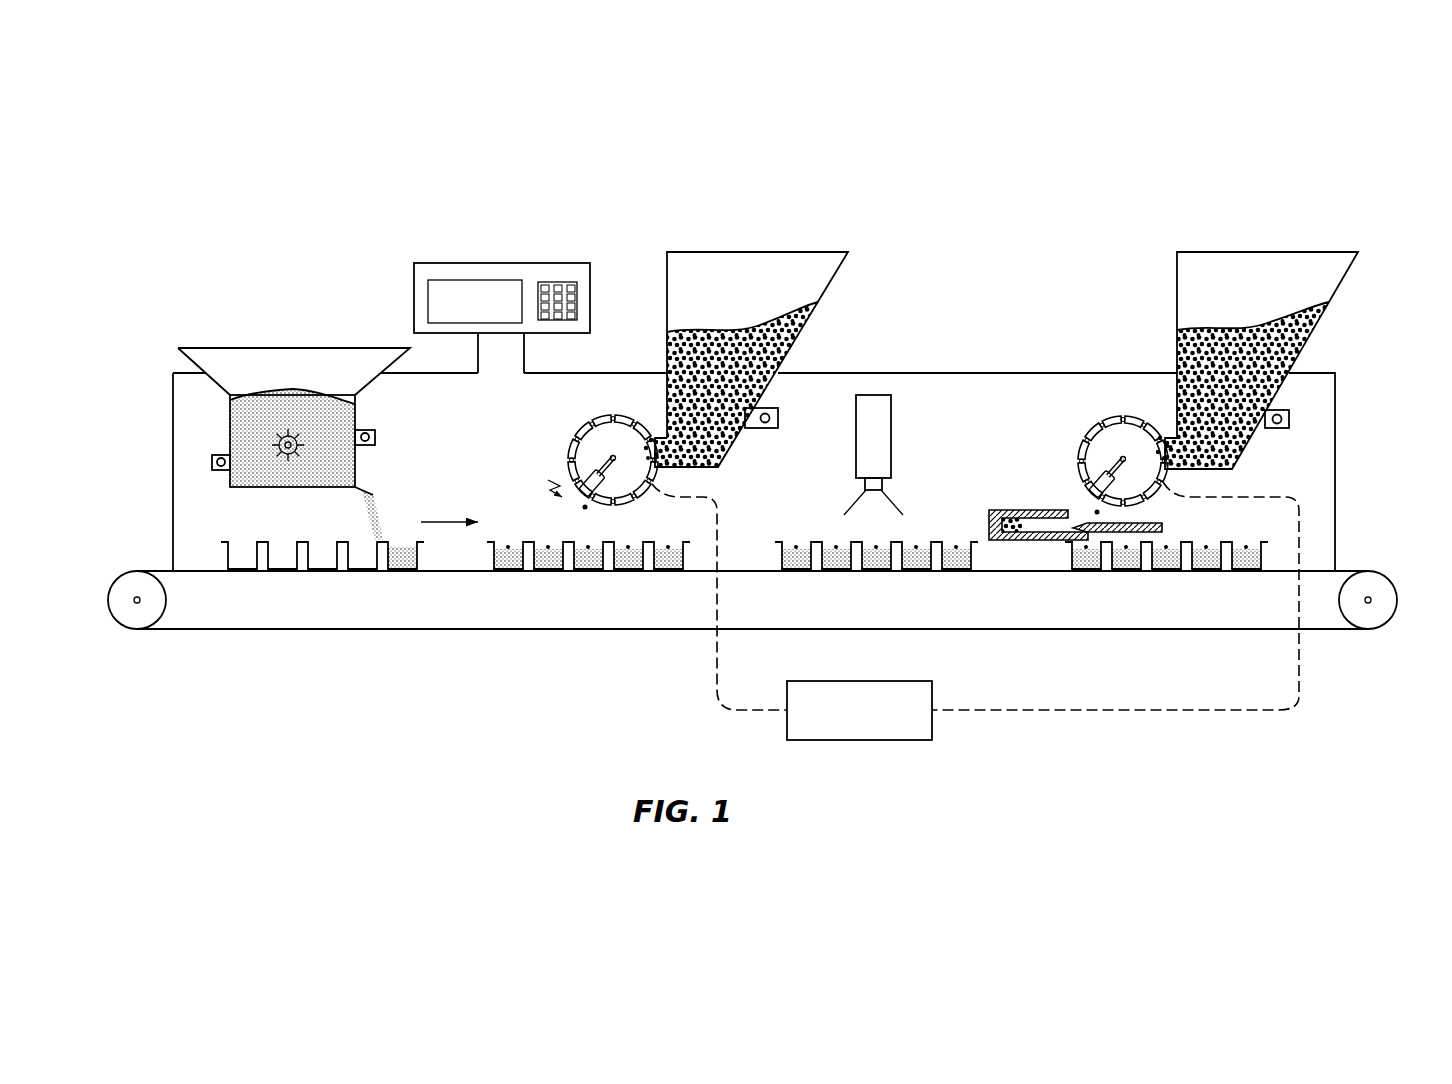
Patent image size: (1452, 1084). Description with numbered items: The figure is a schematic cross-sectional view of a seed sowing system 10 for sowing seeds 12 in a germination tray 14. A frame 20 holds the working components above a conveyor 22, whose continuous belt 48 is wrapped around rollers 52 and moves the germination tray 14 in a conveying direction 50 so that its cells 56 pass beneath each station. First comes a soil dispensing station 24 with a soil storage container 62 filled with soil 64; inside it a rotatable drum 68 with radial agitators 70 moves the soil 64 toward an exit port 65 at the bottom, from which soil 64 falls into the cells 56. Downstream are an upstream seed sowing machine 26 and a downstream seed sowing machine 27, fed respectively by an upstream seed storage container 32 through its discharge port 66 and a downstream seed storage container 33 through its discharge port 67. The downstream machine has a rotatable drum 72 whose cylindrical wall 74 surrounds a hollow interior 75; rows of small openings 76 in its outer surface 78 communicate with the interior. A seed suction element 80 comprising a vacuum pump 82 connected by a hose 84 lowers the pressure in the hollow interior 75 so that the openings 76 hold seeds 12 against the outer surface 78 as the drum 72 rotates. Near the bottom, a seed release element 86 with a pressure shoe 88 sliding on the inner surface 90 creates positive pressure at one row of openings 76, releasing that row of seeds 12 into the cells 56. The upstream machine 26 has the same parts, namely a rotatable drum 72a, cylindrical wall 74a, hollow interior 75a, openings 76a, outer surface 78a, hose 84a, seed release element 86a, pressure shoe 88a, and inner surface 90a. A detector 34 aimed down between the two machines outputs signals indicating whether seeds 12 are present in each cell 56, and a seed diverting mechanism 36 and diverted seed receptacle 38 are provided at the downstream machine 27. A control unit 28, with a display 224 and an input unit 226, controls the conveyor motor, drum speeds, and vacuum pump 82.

The seed sowing system 10 is at (142, 222).
The seeds 12 is at (738, 326).
The germination tray 14 is at (213, 552).
The frame 20 is at (1330, 456).
The conveyor 22 is at (160, 568).
The soil dispensing station 24 is at (136, 378).
The upstream seed sowing machine 26 is at (618, 365).
The downstream seed sowing machine 27 is at (1082, 410).
The control unit 28 is at (410, 288).
The upstream seed storage container 32 is at (852, 294).
The downstream seed storage container 33 is at (1365, 295).
The detector 34 is at (900, 438).
The seed diverting mechanism 36 is at (1167, 529).
The diverted seed receptacle 38 is at (1012, 500).
The continuous belt 48 is at (462, 572).
The conveying direction 50 is at (453, 520).
The rollers 52 is at (137, 617).
The cells 56 is at (248, 545).
The soil storage container 62 is at (230, 426).
The soil 64 is at (281, 400).
The exit port 65 is at (362, 472).
The discharge port 66 is at (655, 440).
The discharge port 67 is at (1171, 436).
The rotatable drum 68 is at (291, 460).
The radial agitators 70 is at (296, 438).
The rotatable drum 72 is at (1157, 400).
The rotatable drum 72a is at (573, 408).
The cylindrical wall 74 is at (1163, 470).
The cylindrical wall 74a is at (652, 470).
The hollow interior 75 is at (1112, 420).
The hollow interior 75a is at (607, 415).
The openings 76 is at (1130, 435).
The openings 76a is at (623, 435).
The outer surface 78 is at (1085, 442).
The outer surface 78a is at (626, 501).
The seed suction element 80 is at (1022, 760).
The vacuum pump 82 is at (920, 681).
The hose 84 is at (1290, 502).
The hose 84a is at (712, 500).
The seed release element 86 is at (1140, 488).
The seed release element 86a is at (625, 484).
The pressure shoe 88 is at (1108, 474).
The pressure shoe 88a is at (596, 470).
The inner surface 90 is at (1147, 455).
The inner surface 90a is at (638, 456).
The display 224 is at (475, 290).
The input unit 226 is at (578, 297).